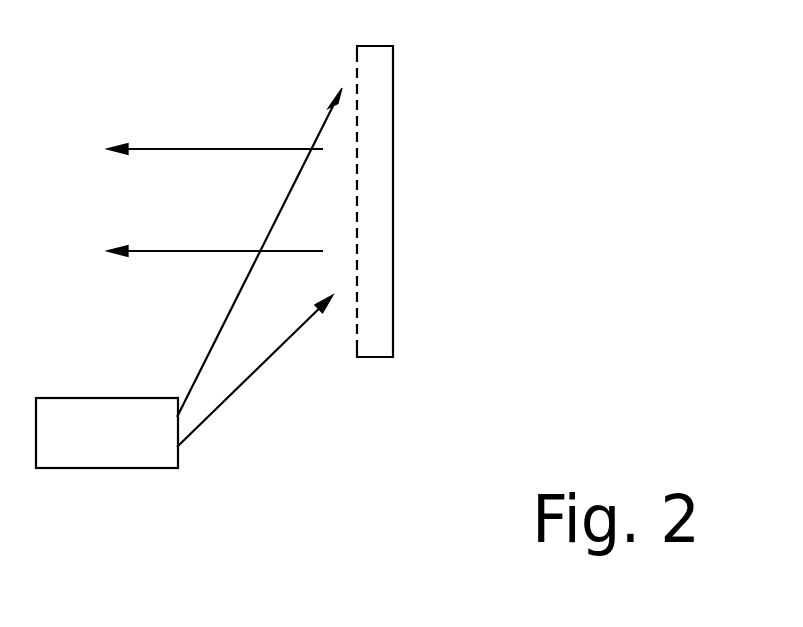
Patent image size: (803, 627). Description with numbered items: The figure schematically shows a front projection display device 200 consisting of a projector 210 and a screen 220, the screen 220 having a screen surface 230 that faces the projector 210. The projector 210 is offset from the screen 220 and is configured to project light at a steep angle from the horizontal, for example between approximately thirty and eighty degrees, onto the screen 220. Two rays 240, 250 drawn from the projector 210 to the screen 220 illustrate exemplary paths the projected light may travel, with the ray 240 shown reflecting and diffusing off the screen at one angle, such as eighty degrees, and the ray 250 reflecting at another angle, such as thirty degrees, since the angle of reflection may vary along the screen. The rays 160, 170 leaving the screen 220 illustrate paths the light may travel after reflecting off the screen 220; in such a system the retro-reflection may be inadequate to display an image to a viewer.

The front projection display device 200 is at (496, 80).
The projector 210 is at (107, 468).
The screen 220 is at (393, 205).
The screen surface 230 is at (357, 73).
The ray 240 is at (207, 348).
The ray 250 is at (250, 378).
The ray 160 is at (215, 140).
The ray 170 is at (215, 242).